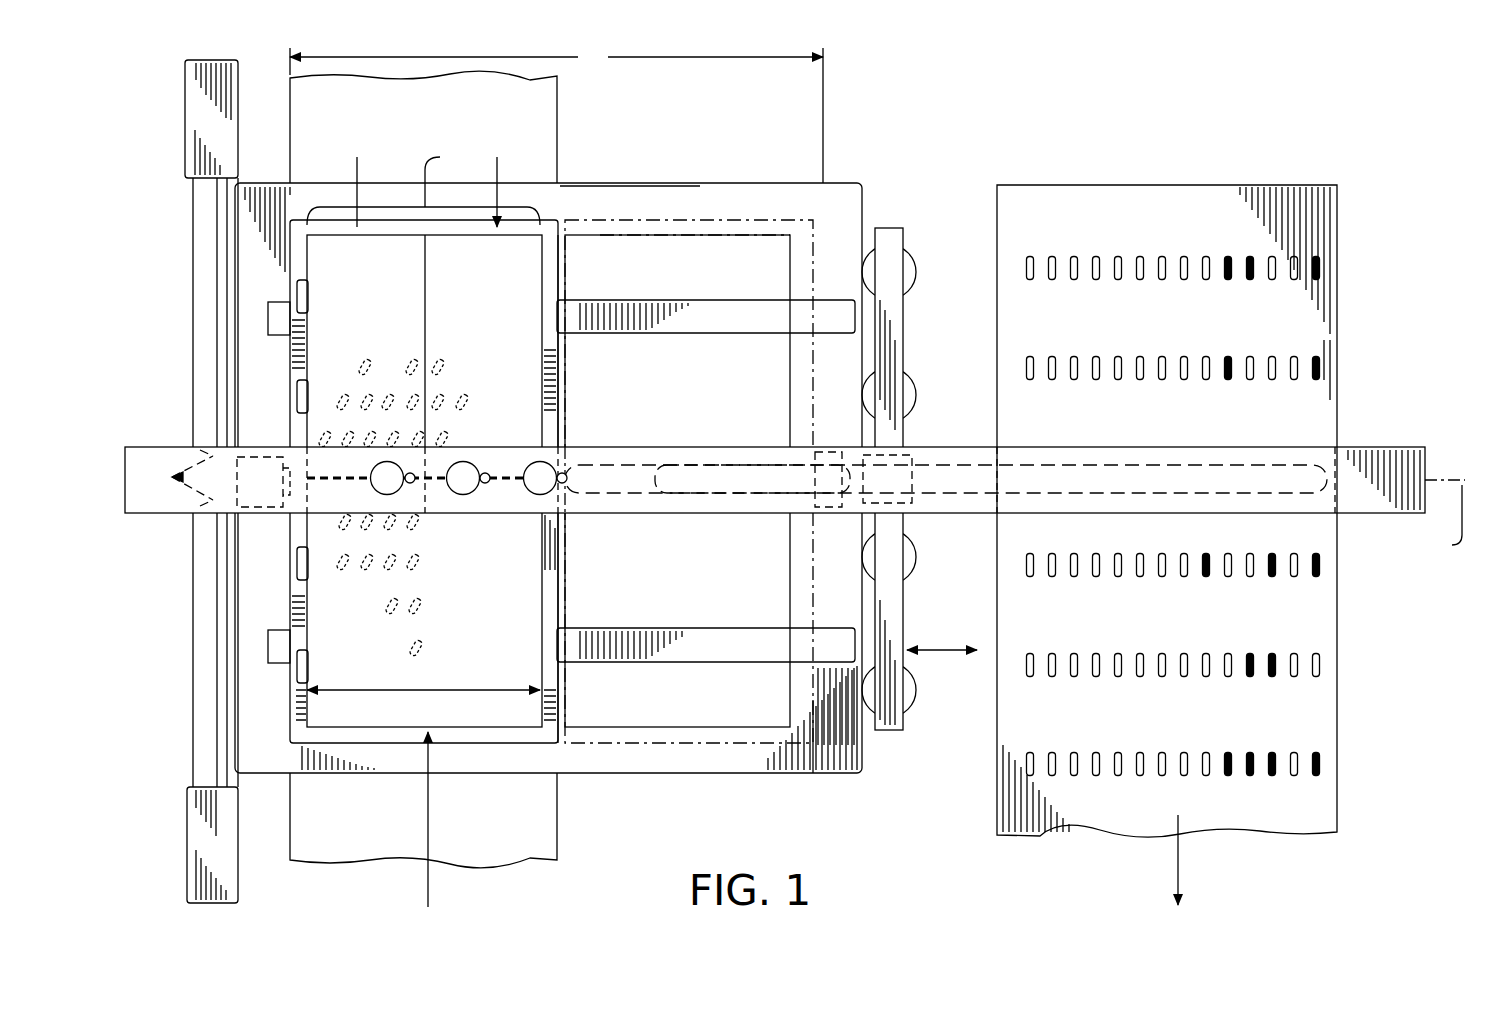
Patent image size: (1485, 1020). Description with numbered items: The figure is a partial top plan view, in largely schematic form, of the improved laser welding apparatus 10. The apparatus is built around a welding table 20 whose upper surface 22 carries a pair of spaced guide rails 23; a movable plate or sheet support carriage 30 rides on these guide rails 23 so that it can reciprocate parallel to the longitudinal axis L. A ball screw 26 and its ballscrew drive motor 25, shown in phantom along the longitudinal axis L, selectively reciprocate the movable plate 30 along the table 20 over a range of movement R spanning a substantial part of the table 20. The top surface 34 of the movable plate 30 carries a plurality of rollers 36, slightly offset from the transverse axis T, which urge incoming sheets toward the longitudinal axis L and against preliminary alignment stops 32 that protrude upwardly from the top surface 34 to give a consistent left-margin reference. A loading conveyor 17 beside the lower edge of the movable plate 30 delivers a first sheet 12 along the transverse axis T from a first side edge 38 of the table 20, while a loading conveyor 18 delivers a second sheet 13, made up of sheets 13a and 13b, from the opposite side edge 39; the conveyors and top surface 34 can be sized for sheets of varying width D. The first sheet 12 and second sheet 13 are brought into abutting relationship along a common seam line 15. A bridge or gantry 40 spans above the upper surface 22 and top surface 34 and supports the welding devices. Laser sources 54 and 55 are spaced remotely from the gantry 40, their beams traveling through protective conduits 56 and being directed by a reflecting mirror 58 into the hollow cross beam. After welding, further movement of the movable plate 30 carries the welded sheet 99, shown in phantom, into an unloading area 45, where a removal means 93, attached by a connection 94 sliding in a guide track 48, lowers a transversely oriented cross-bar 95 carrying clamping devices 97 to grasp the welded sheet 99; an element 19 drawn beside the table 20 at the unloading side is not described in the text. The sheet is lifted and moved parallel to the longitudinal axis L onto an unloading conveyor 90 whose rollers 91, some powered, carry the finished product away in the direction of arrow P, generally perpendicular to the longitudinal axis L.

The laser welding apparatus 10 is at (777, 797).
The first metallic sheet 12 is at (456, 554).
The second metallic sheet 13 is at (423, 182).
The metallic sheet 13a is at (462, 298).
The metallic sheet 13b is at (322, 273).
The common seam line 15 is at (517, 470).
The loading conveyor 17 is at (357, 845).
The loading conveyor 18 is at (416, 116).
The roller support bar 19 is at (862, 200).
The welding table 20 is at (810, 775).
The upper surface 22 is at (588, 727).
The guide rails 23 is at (745, 312).
The ballscrew drive motor 25 is at (250, 510).
The ball screw 26 is at (637, 465).
The movable plate 30 is at (303, 735).
The preliminary alignment stops 32 is at (308, 413).
The top surface 34 is at (548, 561).
The rollers 36 is at (440, 364).
The first side edge 38 is at (680, 775).
The opposite side edge 39 is at (620, 183).
The bridge or gantry 40 is at (1343, 440).
The unloading area 45 is at (745, 218).
The guide track 48 is at (1142, 478).
The laser source 54 is at (196, 842).
The laser source 55 is at (196, 125).
The protective conduits 56 is at (193, 284).
The reflecting mirror 58 is at (174, 478).
The unloading conveyor 90 is at (1266, 624).
The rollers 91 is at (1092, 562).
The removal means 93 is at (910, 305).
The connection 94 is at (922, 485).
The cross-bar 95 is at (893, 610).
The clamping devices 97 is at (912, 548).
The welded sheet 99 is at (665, 235).
The range of movement R is at (556, 113).
The sheet width D is at (448, 690).
The transverse axis T is at (428, 890).
The removal direction arrow P is at (1178, 860).
The longitudinal axis L is at (1445, 517).